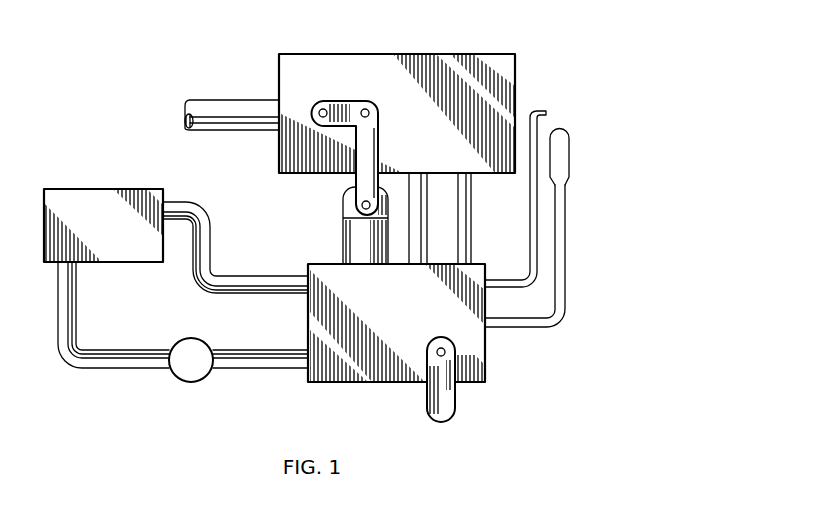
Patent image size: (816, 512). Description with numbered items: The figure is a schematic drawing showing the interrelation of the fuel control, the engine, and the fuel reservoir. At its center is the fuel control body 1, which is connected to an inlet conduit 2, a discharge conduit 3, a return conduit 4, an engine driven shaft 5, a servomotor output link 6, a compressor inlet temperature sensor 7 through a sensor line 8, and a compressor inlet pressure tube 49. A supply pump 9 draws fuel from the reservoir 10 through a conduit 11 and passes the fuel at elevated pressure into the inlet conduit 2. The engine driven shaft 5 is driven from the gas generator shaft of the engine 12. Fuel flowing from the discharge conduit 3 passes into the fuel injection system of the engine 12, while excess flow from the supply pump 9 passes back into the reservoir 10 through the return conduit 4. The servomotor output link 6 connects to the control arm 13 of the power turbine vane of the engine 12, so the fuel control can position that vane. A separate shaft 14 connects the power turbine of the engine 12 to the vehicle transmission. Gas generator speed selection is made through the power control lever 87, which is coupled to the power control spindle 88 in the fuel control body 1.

The fuel control body 1 is at (386, 386).
The inlet conduit 2 is at (263, 370).
The discharge conduit 3 is at (471, 238).
The return conduit 4 is at (211, 243).
The engine driven shaft 5 is at (428, 212).
The servomotor output link 6 is at (380, 138).
The compressor inlet temperature sensor 7 is at (569, 156).
The sensor line 8 is at (567, 268).
The supply pump 9 is at (174, 378).
The reservoir 10 is at (75, 189).
The conduit 11 is at (104, 370).
The engine 12 is at (440, 50).
The control arm 13 is at (348, 100).
The shaft 14 is at (222, 100).
The compressor inlet pressure tube 49 is at (547, 120).
The power control lever 87 is at (459, 404).
The power control spindle 88 is at (447, 352).